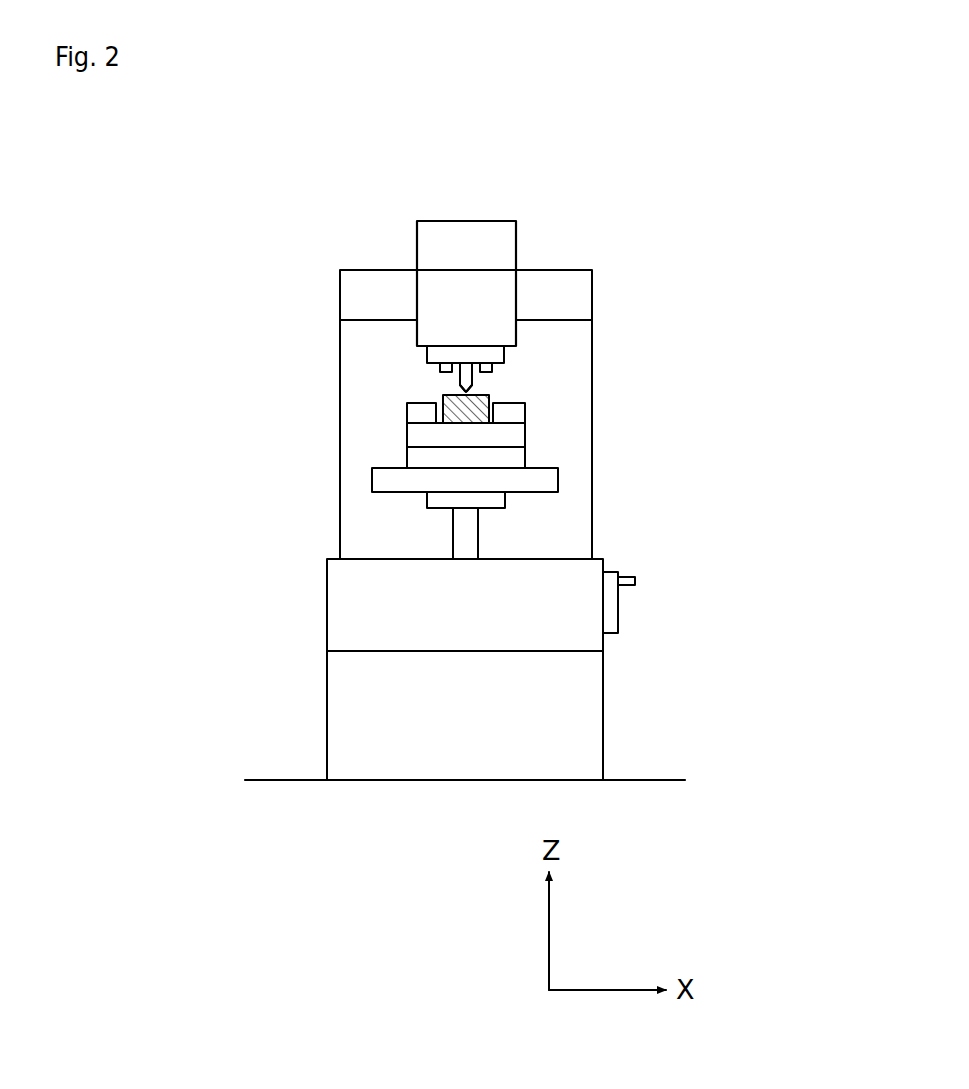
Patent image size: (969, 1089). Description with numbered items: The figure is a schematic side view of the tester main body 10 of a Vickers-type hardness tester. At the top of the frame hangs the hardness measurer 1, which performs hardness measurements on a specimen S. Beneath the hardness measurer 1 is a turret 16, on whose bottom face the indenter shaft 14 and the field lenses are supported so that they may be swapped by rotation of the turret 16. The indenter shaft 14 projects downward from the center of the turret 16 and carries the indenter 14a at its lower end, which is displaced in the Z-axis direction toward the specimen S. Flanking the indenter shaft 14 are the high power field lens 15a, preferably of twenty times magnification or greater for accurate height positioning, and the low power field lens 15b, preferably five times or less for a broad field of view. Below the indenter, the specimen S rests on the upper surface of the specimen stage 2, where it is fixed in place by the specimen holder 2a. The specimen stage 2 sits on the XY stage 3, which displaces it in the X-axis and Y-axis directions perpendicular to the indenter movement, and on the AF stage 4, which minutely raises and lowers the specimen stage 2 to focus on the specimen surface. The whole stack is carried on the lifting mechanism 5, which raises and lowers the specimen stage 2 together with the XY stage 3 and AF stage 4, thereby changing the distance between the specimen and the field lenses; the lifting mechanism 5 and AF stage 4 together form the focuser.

The tester main body 10 is at (624, 186).
The hardness measurer 1 is at (517, 235).
The turret 16 is at (505, 355).
The high power field lens 15a is at (439, 368).
The low power field lens 15b is at (493, 370).
The indenter shaft 14 is at (473, 376).
The indenter 14a is at (473, 389).
The specimen S is at (489, 397).
The AF stage 4 is at (493, 425).
The specimen holder 2a is at (405, 410).
The specimen stage 2 is at (405, 437).
The XY stage 3 is at (372, 475).
The lifting mechanism 5 is at (452, 503).